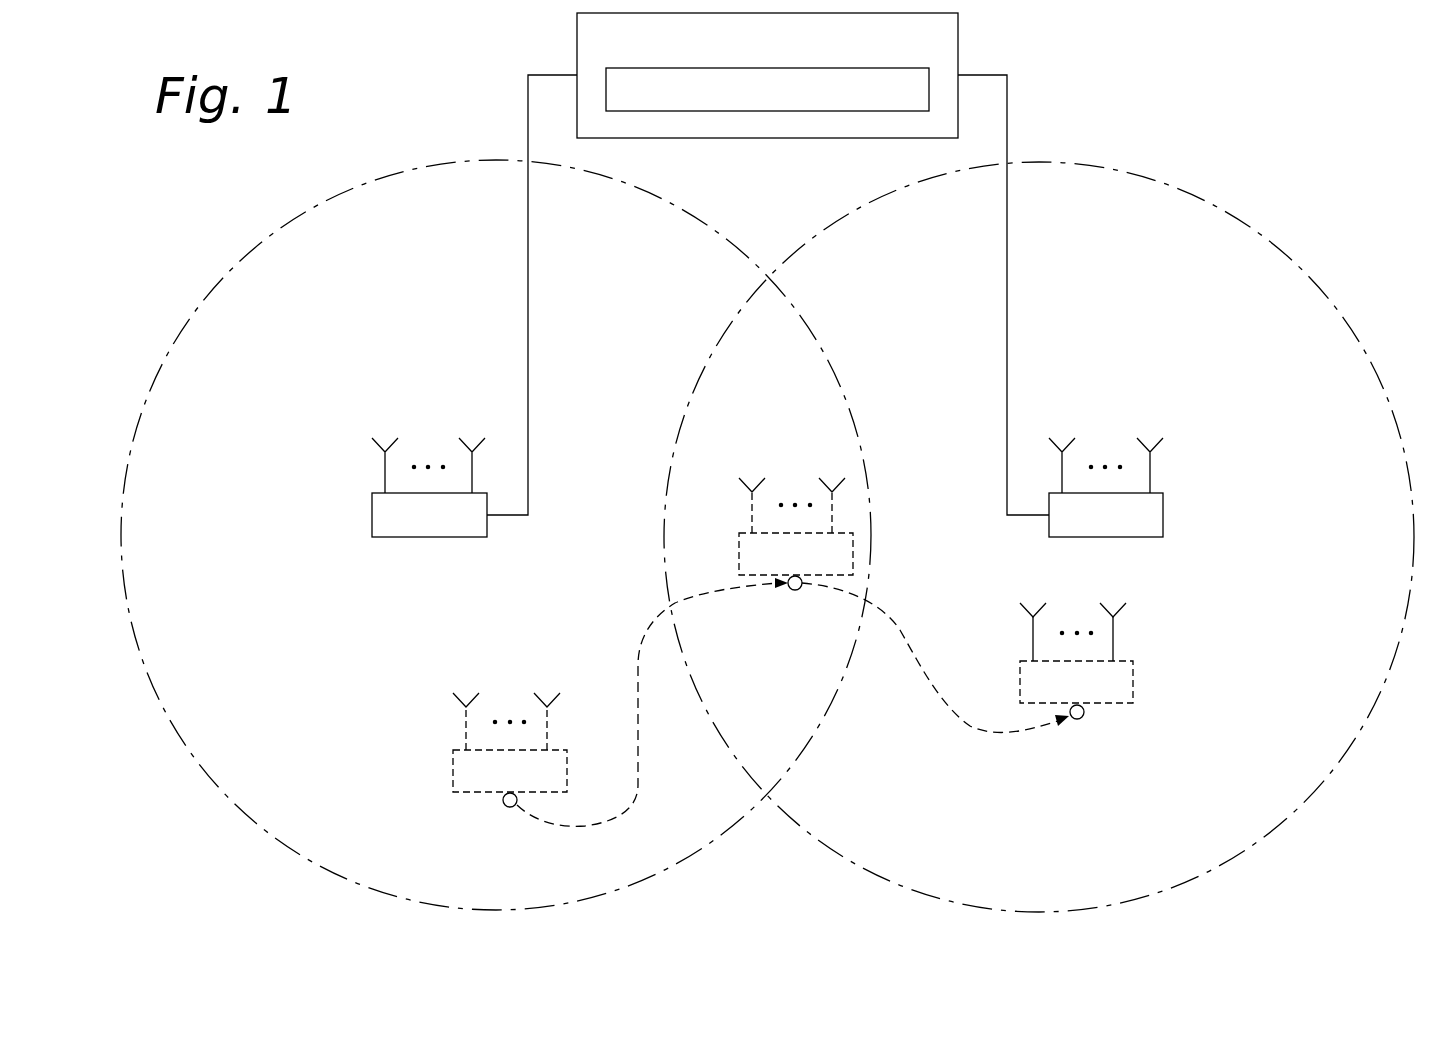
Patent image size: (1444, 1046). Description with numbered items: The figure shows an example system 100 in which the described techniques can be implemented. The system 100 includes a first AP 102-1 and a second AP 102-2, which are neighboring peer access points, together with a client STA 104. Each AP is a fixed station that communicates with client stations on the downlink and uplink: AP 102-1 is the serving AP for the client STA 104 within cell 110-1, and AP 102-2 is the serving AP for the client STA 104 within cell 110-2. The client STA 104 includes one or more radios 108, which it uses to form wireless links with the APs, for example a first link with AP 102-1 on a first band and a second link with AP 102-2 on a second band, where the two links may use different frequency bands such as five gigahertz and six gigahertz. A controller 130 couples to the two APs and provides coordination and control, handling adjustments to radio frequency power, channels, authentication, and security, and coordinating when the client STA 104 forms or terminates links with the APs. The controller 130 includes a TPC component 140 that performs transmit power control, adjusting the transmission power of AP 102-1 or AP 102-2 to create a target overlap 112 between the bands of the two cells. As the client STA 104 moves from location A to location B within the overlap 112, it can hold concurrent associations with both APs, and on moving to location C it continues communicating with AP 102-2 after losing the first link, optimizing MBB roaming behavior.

The system 100 is at (1314, 79).
The controller 130 is at (960, 30).
The TPC component 140 is at (836, 68).
The cell 110-1 is at (228, 268).
The cell 110-2 is at (1268, 237).
The overlap 112 is at (804, 377).
The AP 102-1 is at (372, 515).
The AP 102-2 is at (1163, 513).
The client STA 104 is at (453, 770).
The radios 108 is at (458, 702).